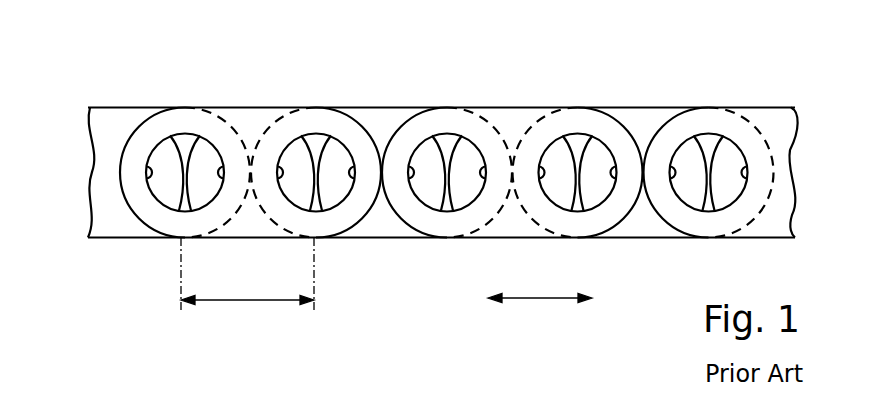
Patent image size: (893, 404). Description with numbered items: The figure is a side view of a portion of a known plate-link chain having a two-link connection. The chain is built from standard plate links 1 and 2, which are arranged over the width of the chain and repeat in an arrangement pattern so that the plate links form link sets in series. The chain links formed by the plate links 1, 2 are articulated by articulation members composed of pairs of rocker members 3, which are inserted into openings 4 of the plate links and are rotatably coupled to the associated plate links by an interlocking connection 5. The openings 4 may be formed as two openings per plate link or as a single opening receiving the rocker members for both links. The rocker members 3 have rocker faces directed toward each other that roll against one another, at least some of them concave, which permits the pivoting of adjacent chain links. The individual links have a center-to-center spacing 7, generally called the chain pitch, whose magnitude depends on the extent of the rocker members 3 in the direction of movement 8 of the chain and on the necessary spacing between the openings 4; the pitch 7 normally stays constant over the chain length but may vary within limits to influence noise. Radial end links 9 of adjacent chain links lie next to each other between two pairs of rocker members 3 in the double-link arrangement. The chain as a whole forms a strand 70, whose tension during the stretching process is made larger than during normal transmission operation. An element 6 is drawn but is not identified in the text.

The plate link 1 is at (109, 122).
The plate link 2 is at (512, 117).
The rocker member 3 is at (595, 155).
The opening 4 is at (316, 143).
The interlocking connection 5 is at (355, 177).
The inner lens ring 6 is at (450, 220).
The center-to-center spacing 7 is at (246, 302).
The direction of movement 8 is at (540, 300).
The radial end link 9 is at (398, 175).
The strand 70 is at (710, 85).